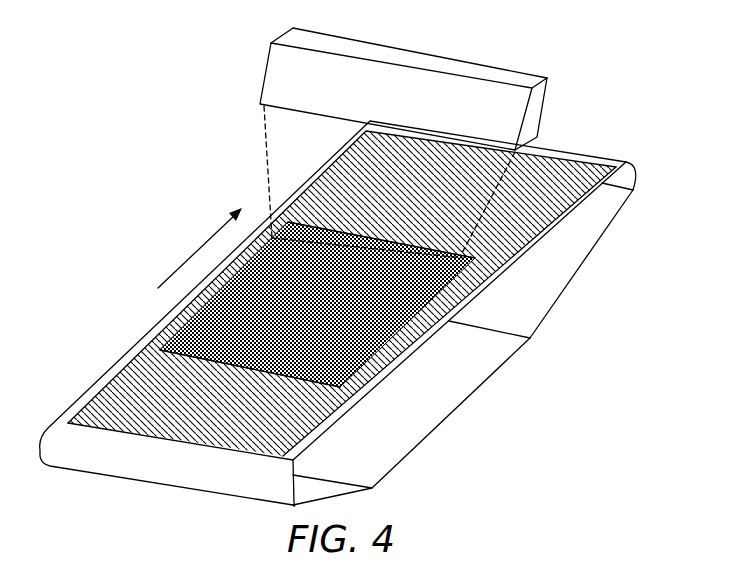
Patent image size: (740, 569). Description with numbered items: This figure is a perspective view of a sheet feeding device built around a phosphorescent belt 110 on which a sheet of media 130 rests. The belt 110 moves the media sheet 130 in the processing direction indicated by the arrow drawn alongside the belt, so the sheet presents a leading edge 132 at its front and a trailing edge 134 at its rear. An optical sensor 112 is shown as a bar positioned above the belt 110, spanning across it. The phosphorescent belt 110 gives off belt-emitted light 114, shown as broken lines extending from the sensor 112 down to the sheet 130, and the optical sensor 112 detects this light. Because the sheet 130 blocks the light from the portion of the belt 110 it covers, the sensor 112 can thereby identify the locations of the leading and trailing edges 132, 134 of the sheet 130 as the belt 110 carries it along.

The phosphorescent belt 110 is at (140, 383).
The optical sensor 112 is at (285, 78).
The belt-emitted light 114 is at (268, 153).
The sheet of media 130 is at (400, 328).
The leading edge 132 is at (401, 243).
The trailing edge 134 is at (260, 372).